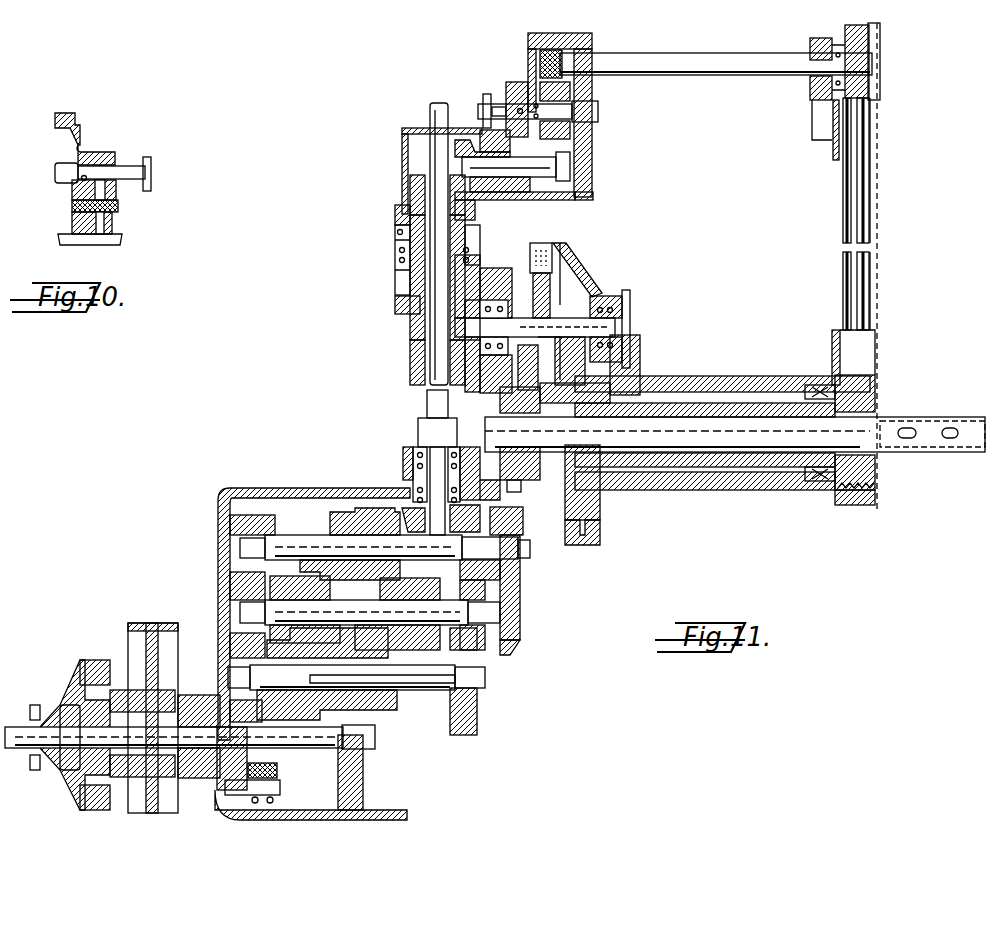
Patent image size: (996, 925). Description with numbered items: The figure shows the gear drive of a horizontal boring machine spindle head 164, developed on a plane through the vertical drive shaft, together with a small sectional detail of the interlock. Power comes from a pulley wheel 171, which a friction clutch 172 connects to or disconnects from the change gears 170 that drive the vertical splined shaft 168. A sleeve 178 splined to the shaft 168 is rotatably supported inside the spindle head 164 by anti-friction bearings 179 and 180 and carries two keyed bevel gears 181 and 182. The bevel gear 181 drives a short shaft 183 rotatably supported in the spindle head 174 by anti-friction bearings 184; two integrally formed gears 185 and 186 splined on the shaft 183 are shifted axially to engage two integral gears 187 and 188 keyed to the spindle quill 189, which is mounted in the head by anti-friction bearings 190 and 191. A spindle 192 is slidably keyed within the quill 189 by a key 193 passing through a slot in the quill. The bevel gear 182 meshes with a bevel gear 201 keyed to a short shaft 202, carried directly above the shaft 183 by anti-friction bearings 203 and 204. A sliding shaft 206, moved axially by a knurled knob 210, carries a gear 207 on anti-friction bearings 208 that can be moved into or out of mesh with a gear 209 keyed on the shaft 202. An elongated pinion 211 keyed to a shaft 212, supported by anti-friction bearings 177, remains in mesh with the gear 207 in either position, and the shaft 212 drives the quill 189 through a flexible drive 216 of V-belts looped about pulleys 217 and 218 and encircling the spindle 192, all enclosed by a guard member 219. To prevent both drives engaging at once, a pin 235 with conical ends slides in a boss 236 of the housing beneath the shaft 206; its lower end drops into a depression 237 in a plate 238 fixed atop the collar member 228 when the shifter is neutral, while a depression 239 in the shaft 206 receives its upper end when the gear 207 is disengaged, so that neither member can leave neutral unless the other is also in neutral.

In FIG. 11, the spindle head 164 is at (593, 195).
In FIG. 11, the splined shaft 168 is at (436, 104).
In FIG. 11, the change gears 170 is at (315, 505).
In FIG. 11, the pulley wheel 171 is at (150, 618).
In FIG. 11, the friction clutch 172 is at (78, 685).
In FIG. 11, the spindle head 174 is at (612, 525).
In FIG. 11, the anti-friction bearings 177 is at (812, 112).
In FIG. 11, the sleeve 178 is at (415, 300).
In FIG. 11, the anti-friction bearing 179 is at (395, 258).
In FIG. 11, the anti-friction bearing 180 is at (395, 212).
In FIG. 11, the bevel gear 181 is at (400, 275).
In FIG. 11, the bevel gear 182 is at (404, 190).
In FIG. 11, the short shaft 183 is at (600, 280).
In FIG. 11, the anti-friction bearings 184 is at (618, 312).
In FIG. 11, the gear 185 is at (530, 282).
In FIG. 11, the gear 186 is at (570, 310).
In FIG. 11, the gear 187 is at (520, 492).
In FIG. 11, the gear 188 is at (565, 512).
In FIG. 11, the spindle quill 189 is at (752, 385).
In FIG. 11, the anti-friction bearing 190 is at (600, 382).
In FIG. 11, the anti-friction bearing 191 is at (818, 383).
In FIG. 11, the spindle 192 is at (938, 415).
In FIG. 11, the key 193 is at (548, 420).
In FIG. 11, the bevel gear 201 is at (462, 150).
In FIG. 11, the short shaft 202 is at (570, 166).
In FIG. 11, the anti-friction bearing 203 is at (470, 212).
In FIG. 11, the anti-friction bearing 204 is at (505, 192).
In FIG. 10, the shaft 206 is at (118, 165).
In FIG. 11, the shaft 206 is at (598, 111).
In FIG. 11, the gear 207 is at (570, 92).
In FIG. 11, the anti-friction bearings 208 is at (570, 126).
In FIG. 11, the gear 209 is at (560, 200).
In FIG. 10, the knurled knob 210 is at (151, 165).
In FIG. 11, the knurled knob 210 is at (487, 94).
In FIG. 11, the elongated pinion 211 is at (535, 62).
In FIG. 11, the shaft 212 is at (680, 62).
In FIG. 11, the flexible drive 216 is at (862, 195).
In FIG. 11, the pulley 217 is at (878, 50).
In FIG. 11, the pulley 218 is at (868, 385).
In FIG. 11, the guard member 219 is at (878, 385).
In FIG. 10, the collar member 228 is at (105, 226).
In FIG. 10, the pin 235 is at (112, 191).
In FIG. 10, the boss 236 is at (93, 140).
In FIG. 10, the hole or depression 237 is at (104, 222).
In FIG. 10, the plate 238 is at (118, 206).
In FIG. 10, the hole or depression 239 is at (75, 182).
In FIG. 11, the hole or depression 239 is at (492, 110).